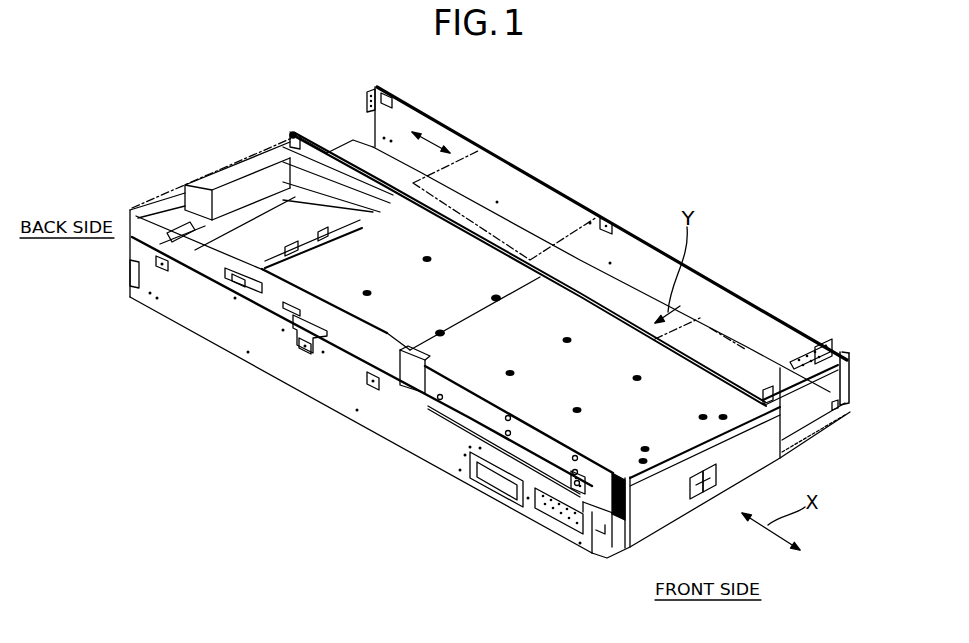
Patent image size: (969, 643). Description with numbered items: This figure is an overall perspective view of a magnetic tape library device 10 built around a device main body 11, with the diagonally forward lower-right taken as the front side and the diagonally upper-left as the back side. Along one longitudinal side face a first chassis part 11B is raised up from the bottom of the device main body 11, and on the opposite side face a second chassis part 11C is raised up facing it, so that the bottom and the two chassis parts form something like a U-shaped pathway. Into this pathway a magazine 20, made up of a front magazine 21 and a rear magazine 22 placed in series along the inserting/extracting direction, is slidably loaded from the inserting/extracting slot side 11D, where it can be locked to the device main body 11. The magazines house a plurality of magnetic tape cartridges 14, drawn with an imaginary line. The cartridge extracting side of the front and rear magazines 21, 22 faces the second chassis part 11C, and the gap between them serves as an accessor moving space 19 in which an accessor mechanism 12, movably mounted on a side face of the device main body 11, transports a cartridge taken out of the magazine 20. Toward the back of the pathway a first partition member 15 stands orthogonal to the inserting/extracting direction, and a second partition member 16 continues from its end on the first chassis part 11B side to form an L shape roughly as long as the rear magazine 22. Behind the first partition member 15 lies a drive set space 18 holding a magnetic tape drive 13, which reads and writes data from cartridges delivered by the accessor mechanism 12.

The device 10 is at (724, 250).
The device main body 11 is at (507, 160).
The first chassis part 11B is at (183, 285).
The second chassis part 11C is at (454, 127).
The inserting/extracting slot side 11D is at (610, 558).
The accessor mechanism 12 is at (554, 195).
The magnetic tape drive 13 is at (278, 140).
The magnetic tape cartridge 14 is at (763, 350).
The first partition member 15 is at (322, 248).
The second partition member 16 is at (288, 335).
The drive set space 18 is at (242, 222).
The accessor moving space 19 is at (627, 297).
The magazine 20 is at (346, 402).
The front magazine 21 is at (427, 355).
The rear magazine 22 is at (383, 325).